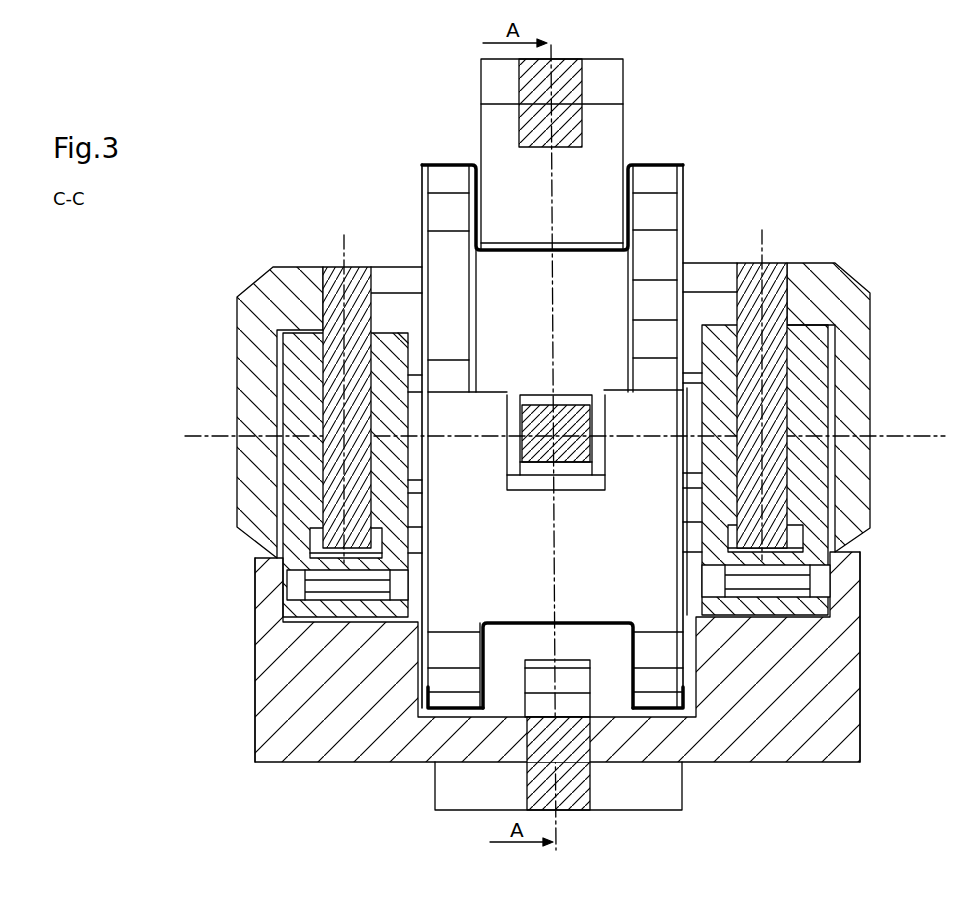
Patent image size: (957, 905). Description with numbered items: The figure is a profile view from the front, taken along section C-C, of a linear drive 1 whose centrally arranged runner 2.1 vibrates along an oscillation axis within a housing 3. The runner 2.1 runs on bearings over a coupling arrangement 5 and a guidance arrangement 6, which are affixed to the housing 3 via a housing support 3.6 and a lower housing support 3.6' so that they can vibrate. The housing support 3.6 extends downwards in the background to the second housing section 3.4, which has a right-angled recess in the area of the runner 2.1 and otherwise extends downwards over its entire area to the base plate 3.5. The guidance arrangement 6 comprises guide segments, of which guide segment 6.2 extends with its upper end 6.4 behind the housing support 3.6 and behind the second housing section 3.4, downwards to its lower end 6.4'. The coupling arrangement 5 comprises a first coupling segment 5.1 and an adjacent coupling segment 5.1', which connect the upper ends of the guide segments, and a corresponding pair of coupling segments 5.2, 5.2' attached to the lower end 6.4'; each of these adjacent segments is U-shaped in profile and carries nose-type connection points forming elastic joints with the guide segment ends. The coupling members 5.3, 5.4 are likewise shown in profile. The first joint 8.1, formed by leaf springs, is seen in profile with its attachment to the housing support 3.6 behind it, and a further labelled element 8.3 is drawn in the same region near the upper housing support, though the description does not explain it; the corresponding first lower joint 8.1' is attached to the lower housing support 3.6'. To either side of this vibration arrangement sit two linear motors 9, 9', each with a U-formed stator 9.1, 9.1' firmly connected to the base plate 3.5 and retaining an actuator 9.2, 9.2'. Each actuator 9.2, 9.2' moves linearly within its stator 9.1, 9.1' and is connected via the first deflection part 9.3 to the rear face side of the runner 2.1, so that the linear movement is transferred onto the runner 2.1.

The linear drive 1 is at (224, 158).
The runner 2.1 is at (582, 468).
The housing 3 is at (869, 677).
The second housing section 3.4 is at (522, 524).
The base plate 3.5 is at (256, 746).
The housing support 3.6 is at (570, 133).
The lower housing support 3.6' is at (527, 802).
The coupling arrangement 5 is at (447, 144).
The first coupling segment 5.1 is at (670, 408).
The adjacent coupling segment 5.1' is at (423, 427).
The second coupling segment 5.2 is at (693, 738).
The adjacent coupling segment 5.2' is at (408, 738).
The coupling member 5.3 is at (585, 252).
The coupling member 5.4 is at (497, 622).
The guidance arrangement 6 is at (442, 288).
The guide segment 6.2 is at (671, 314).
The upper end of guide segment 6.4 is at (688, 275).
The lower end of guide segment 6.4' is at (555, 645).
The first joint 8.1 is at (562, 140).
The first lower joint 8.1' is at (599, 750).
The pin receiving space 8.3 is at (496, 250).
The linear motor 9 is at (810, 439).
The linear motor 9' is at (292, 408).
The stator 9.1 is at (820, 470).
The stator 9.1' is at (299, 475).
The actuator 9.2 is at (774, 381).
The actuator 9.2' is at (326, 377).
The first deflection part 9.3 is at (697, 267).